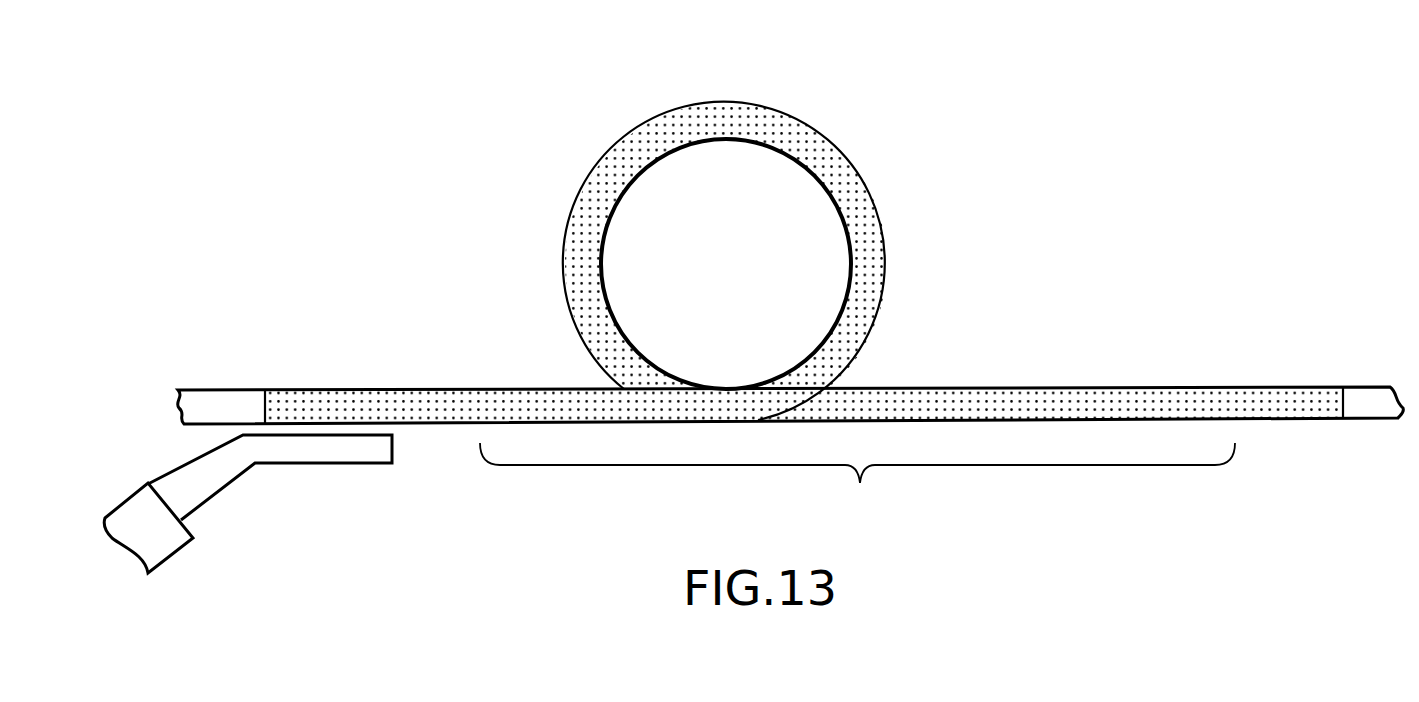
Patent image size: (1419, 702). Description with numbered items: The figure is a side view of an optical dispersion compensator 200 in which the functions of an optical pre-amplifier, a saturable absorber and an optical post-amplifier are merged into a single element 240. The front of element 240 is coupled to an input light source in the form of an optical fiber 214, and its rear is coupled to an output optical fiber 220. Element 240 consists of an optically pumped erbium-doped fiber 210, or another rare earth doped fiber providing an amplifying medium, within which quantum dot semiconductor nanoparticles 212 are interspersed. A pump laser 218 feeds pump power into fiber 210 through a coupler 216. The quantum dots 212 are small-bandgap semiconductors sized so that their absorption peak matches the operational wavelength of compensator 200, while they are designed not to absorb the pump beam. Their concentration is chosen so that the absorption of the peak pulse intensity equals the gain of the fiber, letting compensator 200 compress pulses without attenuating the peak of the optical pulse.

The optical dispersion compensator 200 is at (757, 55).
The erbium-doped fiber 210 is at (875, 264).
The quantum dot semiconductor nanoparticles 212 is at (447, 410).
The optical fiber 214 is at (219, 401).
The coupler 216 is at (315, 463).
The pump laser 218 is at (163, 543).
The output optical fiber 220 is at (1368, 399).
The single element 240 is at (857, 484).